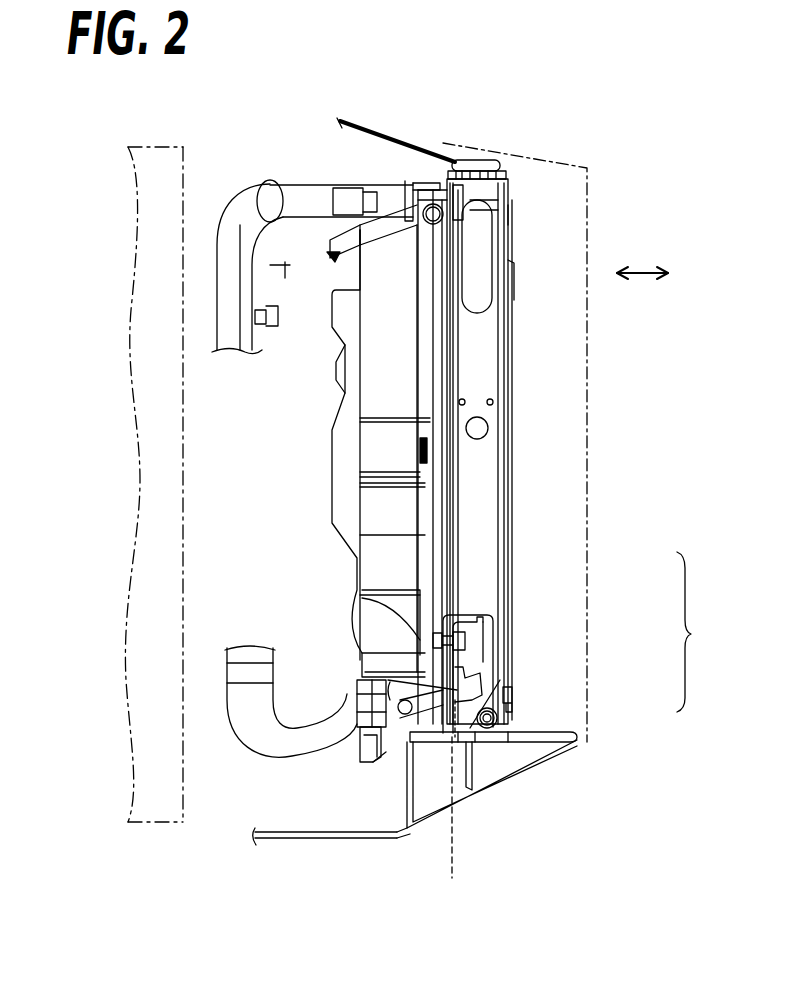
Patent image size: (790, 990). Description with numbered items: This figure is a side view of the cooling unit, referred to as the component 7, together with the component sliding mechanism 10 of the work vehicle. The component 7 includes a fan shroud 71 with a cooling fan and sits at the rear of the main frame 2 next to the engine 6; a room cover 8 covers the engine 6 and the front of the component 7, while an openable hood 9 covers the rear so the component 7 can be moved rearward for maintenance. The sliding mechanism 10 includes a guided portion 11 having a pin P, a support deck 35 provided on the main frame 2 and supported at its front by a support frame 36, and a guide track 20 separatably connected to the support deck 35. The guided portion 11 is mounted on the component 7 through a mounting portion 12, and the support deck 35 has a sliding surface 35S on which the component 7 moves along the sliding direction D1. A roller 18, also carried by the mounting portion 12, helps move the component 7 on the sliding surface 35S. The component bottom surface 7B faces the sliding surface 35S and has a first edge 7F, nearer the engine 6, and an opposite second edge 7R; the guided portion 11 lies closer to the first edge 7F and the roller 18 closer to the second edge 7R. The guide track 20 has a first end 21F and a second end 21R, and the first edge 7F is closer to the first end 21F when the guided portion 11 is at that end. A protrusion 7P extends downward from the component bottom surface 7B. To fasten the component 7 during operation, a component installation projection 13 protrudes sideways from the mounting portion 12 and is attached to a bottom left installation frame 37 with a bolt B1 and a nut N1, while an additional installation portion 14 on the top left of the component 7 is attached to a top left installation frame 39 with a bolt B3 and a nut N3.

The engine 6 is at (147, 146).
The room cover 8 is at (355, 119).
The hood 9 is at (567, 163).
The additional installation portion 14 is at (468, 195).
The cooling unit (component) 7 is at (507, 171).
The bolt B3 is at (442, 210).
The sliding direction D1 is at (643, 270).
The top left installation frame 39 is at (400, 187).
The nut N3 is at (355, 238).
The fan shroud 71 is at (393, 495).
The component installation projection 13 is at (493, 617).
The mounting portion 12 is at (493, 640).
The guided portion 11 is at (497, 665).
The guide track 20 is at (500, 698).
The roller 18 is at (505, 716).
The support deck 35 is at (543, 732).
The component sliding mechanism 10 is at (692, 632).
The bolt B1 is at (435, 640).
The nut N1 is at (432, 642).
The pin P is at (400, 703).
The first end 21F is at (397, 703).
The bottom left installation frame 37 is at (350, 690).
The first edge 7F is at (357, 748).
The protrusion 7P is at (373, 765).
The support frame 36 is at (388, 787).
The main frame 2 is at (430, 818).
The second end 21R is at (449, 817).
The component bottom surface 7B is at (462, 734).
The second edge 7R is at (517, 733).
The sliding surface 35S is at (582, 742).